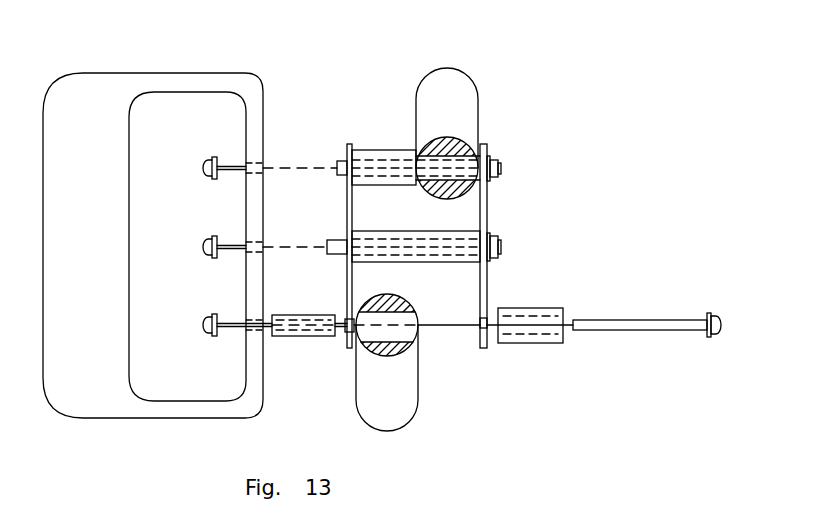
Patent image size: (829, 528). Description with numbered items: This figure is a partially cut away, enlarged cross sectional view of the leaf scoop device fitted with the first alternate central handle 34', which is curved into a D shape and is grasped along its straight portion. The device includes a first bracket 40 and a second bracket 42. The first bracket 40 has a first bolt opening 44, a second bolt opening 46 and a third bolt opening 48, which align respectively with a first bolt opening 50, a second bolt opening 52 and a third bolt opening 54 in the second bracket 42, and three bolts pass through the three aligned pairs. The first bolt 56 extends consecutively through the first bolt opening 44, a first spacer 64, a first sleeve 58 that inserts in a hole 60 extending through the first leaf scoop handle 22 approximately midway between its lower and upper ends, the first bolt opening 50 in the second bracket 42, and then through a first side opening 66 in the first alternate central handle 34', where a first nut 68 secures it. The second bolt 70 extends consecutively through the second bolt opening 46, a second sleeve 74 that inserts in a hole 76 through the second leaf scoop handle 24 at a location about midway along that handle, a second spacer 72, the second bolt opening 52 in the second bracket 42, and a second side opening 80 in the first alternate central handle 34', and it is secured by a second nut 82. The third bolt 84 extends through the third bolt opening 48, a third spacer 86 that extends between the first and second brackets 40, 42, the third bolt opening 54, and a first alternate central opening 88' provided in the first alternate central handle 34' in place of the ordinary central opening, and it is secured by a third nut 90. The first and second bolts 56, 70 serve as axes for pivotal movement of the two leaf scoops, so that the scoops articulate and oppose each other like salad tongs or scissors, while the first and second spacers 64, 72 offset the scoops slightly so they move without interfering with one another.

The first alternate central handle 34' is at (153, 216).
The second side opening 80 is at (252, 160).
The second nut 82 is at (203, 170).
The first alternate central opening 88' is at (259, 224).
The third nut 90 is at (203, 248).
The first side opening 66 is at (252, 318).
The first nut 68 is at (203, 326).
The second bolt opening 52 is at (346, 150).
The third bolt opening 54 is at (350, 256).
The first bolt opening 50 is at (347, 333).
The first sleeve 58 is at (312, 337).
The second bracket 42 is at (347, 217).
The first bracket 40 is at (487, 215).
The first bolt opening 44 is at (481, 333).
The second spacer 72 is at (367, 148).
The third spacer 86 is at (432, 231).
The hole 76 is at (445, 140).
The second sleeve 74 is at (430, 145).
The second leaf scoop handle 24 is at (482, 107).
The hole 60 is at (403, 316).
The first leaf scoop handle 22 is at (418, 372).
The second bolt 70 is at (500, 162).
The second bolt opening 46 is at (492, 178).
The third bolt 84 is at (498, 242).
The third bolt opening 48 is at (485, 258).
The first spacer 64 is at (527, 344).
The first bolt 56 is at (716, 317).